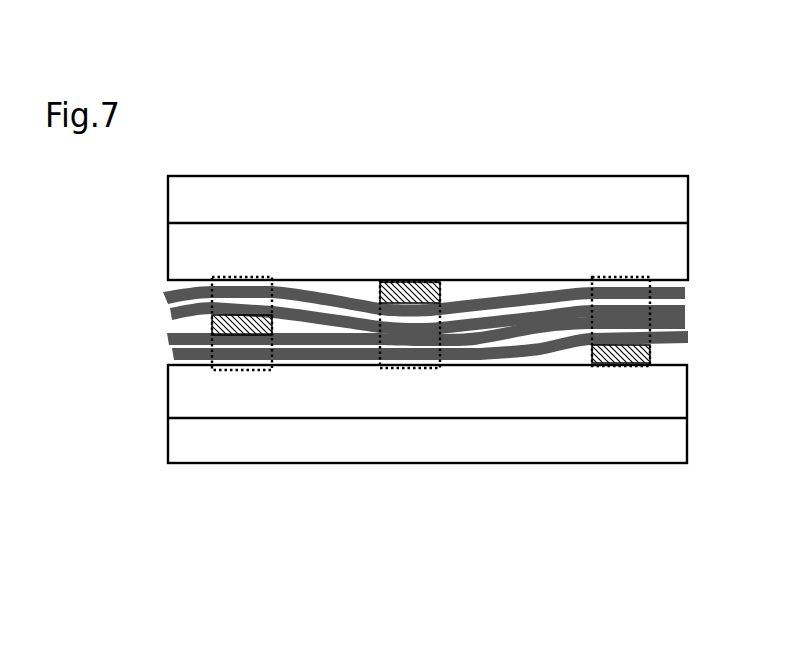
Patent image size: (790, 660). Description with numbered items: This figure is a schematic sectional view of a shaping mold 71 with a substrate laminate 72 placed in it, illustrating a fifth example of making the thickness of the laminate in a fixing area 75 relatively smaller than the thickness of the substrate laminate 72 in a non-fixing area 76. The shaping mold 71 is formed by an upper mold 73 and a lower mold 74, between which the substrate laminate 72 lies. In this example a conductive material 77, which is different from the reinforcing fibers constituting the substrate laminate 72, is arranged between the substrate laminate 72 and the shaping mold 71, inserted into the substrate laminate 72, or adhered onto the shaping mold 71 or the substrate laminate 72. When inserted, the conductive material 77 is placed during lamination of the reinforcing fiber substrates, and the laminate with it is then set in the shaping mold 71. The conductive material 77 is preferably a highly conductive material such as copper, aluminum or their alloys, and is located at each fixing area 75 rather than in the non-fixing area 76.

The shaping mold 71 is at (115, 437).
The substrate laminate 72 is at (399, 338).
The upper mold 73 is at (178, 253).
The lower mold 74 is at (177, 400).
The fixing area 75 is at (608, 277).
The non-fixing area 76 is at (330, 297).
The conductive material 77 is at (241, 290).